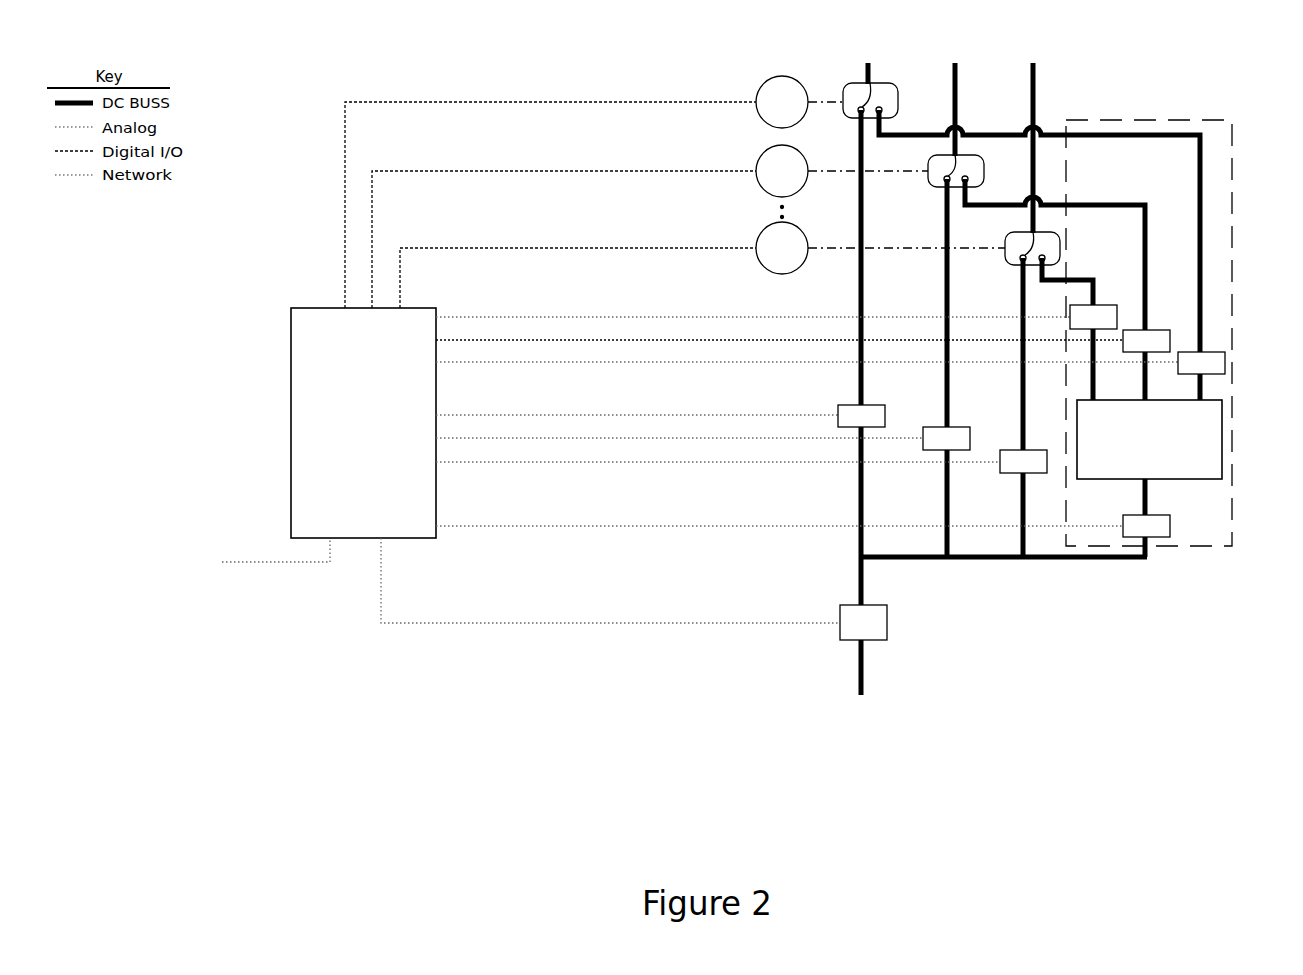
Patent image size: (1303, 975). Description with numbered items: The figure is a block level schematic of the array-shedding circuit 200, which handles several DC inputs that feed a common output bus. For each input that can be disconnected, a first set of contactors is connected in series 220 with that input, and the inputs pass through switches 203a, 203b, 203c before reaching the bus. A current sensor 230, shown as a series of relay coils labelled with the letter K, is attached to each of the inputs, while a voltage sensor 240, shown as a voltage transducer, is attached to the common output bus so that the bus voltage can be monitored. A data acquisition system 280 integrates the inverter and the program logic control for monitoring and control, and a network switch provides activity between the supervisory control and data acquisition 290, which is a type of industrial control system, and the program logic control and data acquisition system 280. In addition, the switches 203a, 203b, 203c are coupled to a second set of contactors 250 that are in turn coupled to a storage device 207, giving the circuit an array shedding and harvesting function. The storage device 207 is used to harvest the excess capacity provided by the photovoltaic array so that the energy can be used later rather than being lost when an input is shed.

The array-shedding circuit 200 is at (672, 822).
The switch 203a is at (887, 81).
The switch 203b is at (972, 150).
The switch 203c is at (1060, 248).
The storage device 207 is at (1223, 452).
The first set of contactors 220 is at (942, 427).
The current sensor 230 is at (675, 175).
The voltage sensor 240 is at (827, 633).
The second set of contactors 250 is at (1149, 305).
The data acquisition system 280 is at (705, 465).
The supervisory control and data acquisition 290 is at (232, 569).